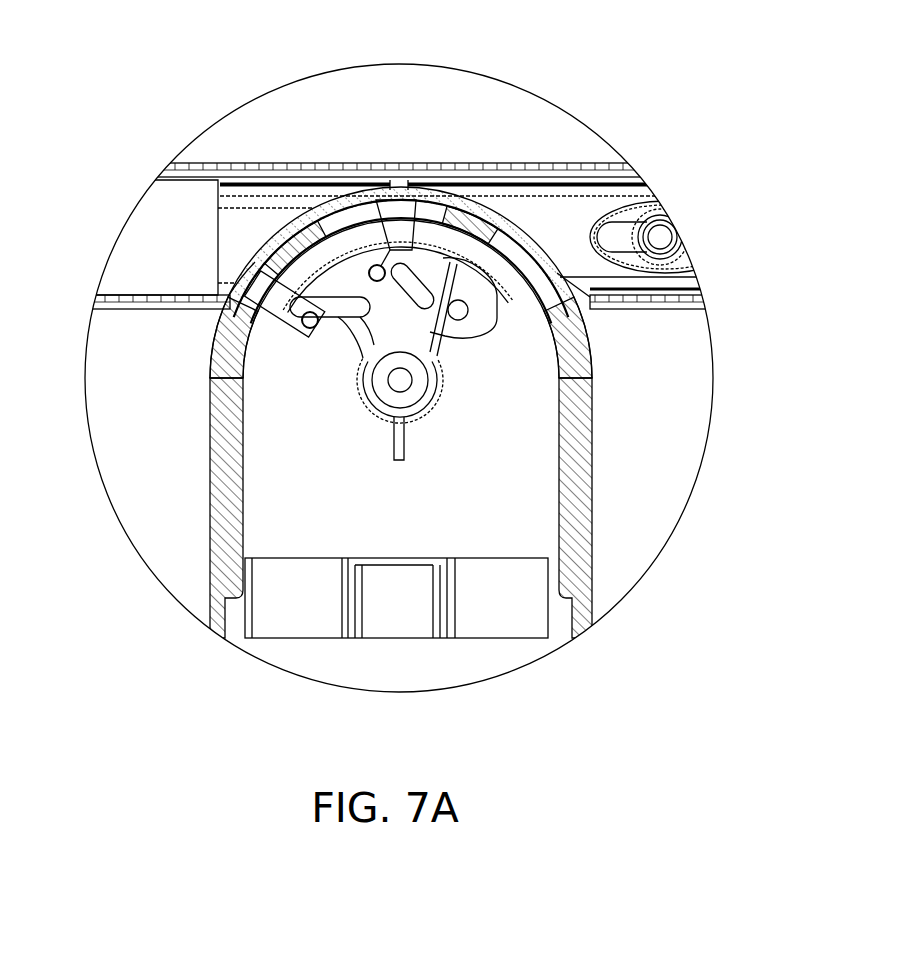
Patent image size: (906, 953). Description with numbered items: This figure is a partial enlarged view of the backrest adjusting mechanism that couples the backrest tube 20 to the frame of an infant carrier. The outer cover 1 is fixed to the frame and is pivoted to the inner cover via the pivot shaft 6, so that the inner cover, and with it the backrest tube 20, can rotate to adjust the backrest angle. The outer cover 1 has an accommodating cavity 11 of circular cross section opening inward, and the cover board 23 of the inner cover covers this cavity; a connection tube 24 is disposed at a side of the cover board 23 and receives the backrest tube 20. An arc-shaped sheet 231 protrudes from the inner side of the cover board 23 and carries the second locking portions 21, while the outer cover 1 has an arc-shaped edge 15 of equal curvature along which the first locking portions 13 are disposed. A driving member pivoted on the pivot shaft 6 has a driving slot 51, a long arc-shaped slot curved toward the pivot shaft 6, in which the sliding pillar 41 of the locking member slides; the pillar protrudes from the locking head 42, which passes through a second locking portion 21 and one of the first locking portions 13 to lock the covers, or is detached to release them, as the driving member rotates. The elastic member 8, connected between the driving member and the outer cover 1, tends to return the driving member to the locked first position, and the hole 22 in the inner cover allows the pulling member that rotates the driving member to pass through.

The outer cover 1 is at (582, 497).
The pivot shaft 6 is at (388, 390).
The elastic member 8 is at (394, 416).
The accommodating cavity 11 is at (500, 450).
The first locking portion 13 is at (440, 218).
The arc-shaped edge 15 is at (280, 253).
The backrest tube 20 is at (160, 223).
The second locking portion 21 is at (250, 311).
The hole 22 is at (238, 270).
The cover board 23 is at (500, 403).
The arc-shaped sheet 231 is at (288, 242).
The connection tube 24 is at (697, 298).
The sliding pillar 41 is at (368, 267).
The locking head 42 is at (370, 213).
The driving slot 51 is at (400, 266).